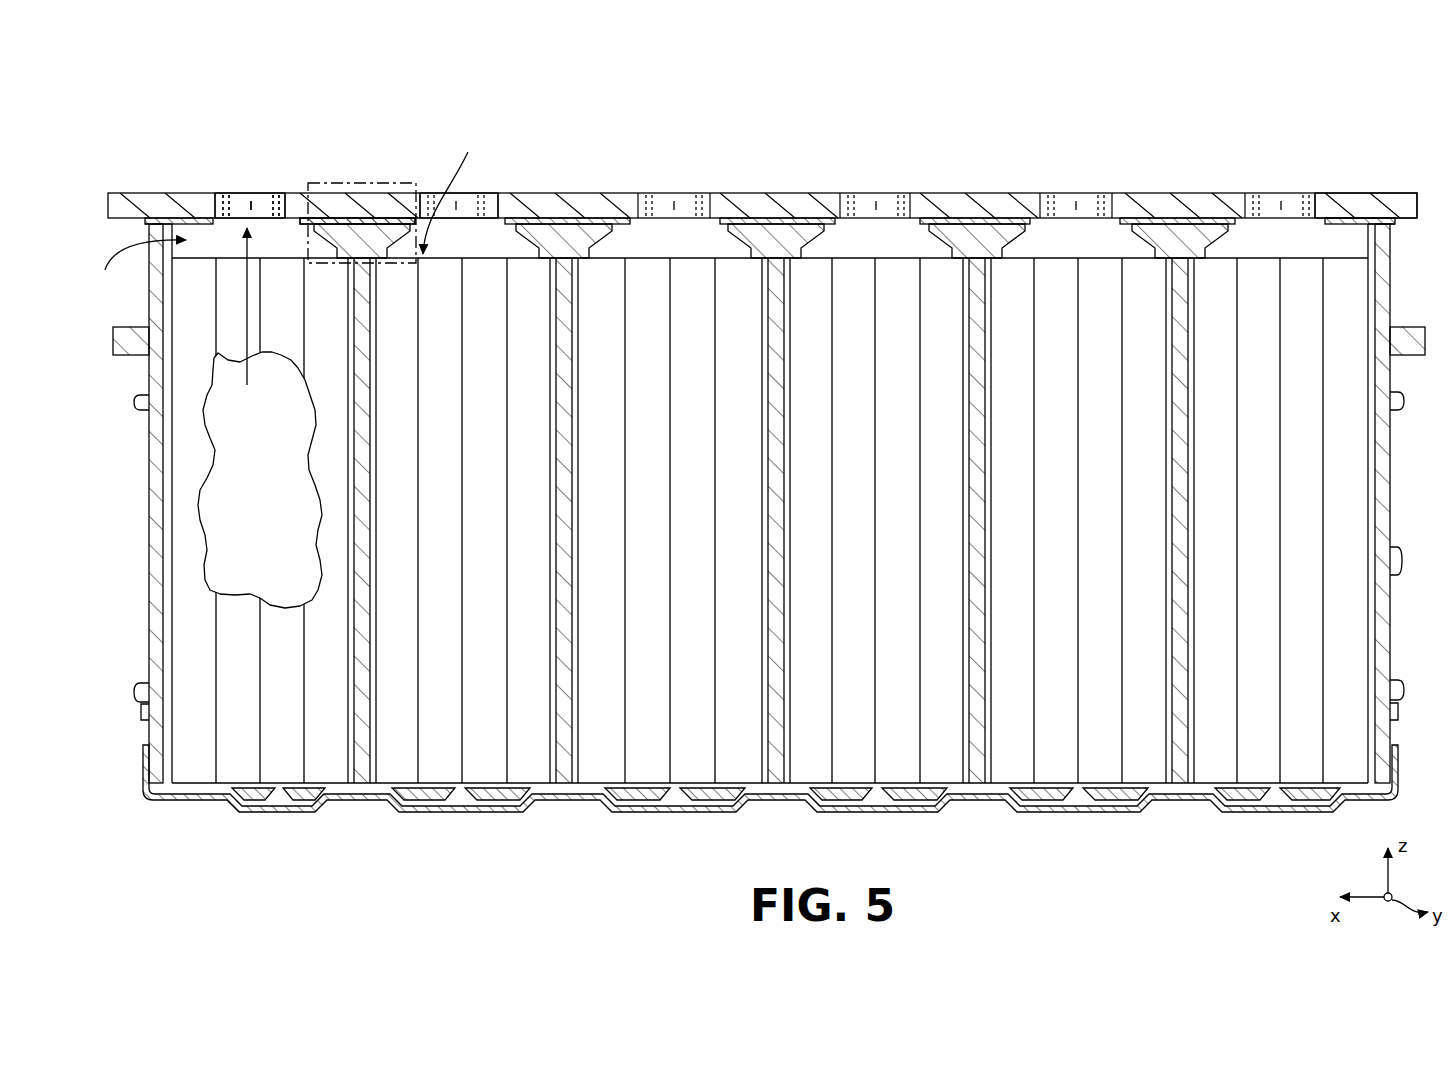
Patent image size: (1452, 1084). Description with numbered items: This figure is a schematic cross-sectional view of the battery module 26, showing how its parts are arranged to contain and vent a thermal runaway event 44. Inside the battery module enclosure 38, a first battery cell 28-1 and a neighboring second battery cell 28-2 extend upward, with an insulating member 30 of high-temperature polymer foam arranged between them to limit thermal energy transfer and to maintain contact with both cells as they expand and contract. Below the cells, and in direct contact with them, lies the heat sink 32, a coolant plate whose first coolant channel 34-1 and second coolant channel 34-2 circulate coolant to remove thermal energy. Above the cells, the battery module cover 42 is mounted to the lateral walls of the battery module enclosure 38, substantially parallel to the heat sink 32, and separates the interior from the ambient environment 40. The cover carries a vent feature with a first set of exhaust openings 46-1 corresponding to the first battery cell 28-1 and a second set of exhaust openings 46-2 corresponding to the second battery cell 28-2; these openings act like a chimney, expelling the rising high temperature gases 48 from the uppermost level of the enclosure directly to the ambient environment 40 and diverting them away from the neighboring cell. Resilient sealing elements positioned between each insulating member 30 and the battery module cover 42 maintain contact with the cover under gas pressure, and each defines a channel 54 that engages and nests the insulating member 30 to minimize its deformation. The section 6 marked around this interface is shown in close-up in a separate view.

The section 6 is at (388, 180).
The battery module 26 is at (1407, 501).
The first battery cell 28-1 is at (133, 271).
The second battery cell 28-2 is at (458, 189).
The insulating member 30 is at (378, 245).
The heat sink 32 is at (195, 800).
The first coolant channel 34-1 is at (297, 812).
The second coolant channel 34-2 is at (492, 812).
The battery module enclosure 38 is at (157, 466).
The ambient environment 40 is at (762, 150).
The battery module cover 42 is at (1352, 192).
The thermal runaway event 44 is at (260, 480).
The first set of exhaust openings 46-1 is at (237, 203).
The second set of exhaust openings 46-2 is at (466, 200).
The high temperature gases 48 is at (247, 248).
The channel 54 is at (322, 248).